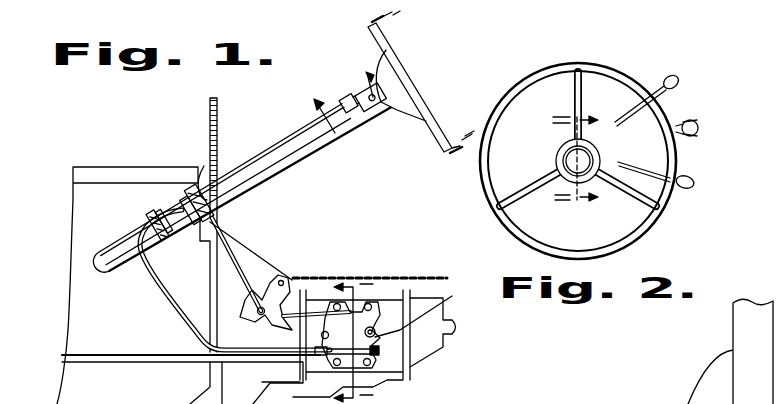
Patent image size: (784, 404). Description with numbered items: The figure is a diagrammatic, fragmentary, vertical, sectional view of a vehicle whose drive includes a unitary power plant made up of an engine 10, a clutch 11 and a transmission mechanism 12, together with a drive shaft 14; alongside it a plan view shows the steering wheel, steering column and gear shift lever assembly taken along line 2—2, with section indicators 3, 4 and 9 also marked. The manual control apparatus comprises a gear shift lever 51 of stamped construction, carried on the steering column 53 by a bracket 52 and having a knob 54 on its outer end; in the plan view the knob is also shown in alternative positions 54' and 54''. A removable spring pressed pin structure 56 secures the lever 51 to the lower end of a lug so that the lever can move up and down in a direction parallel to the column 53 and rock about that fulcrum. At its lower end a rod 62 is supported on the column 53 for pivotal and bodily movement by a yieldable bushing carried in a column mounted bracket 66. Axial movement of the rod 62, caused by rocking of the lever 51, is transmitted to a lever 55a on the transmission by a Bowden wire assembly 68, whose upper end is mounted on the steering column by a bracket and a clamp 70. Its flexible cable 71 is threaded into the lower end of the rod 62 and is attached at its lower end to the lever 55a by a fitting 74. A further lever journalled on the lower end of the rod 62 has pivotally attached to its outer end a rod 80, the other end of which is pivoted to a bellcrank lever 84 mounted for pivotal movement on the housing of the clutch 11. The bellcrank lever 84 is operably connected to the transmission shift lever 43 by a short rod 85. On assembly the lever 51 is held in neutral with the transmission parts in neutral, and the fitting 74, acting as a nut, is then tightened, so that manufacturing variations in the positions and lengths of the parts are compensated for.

In FIG. 1, the engine 10 is at (84, 206).
In FIG. 1, the clutch 11 is at (243, 263).
In FIG. 1, the transmission mechanism 12 is at (388, 298).
In FIG. 1, the drive shaft 14 is at (455, 330).
In FIG. 1, the section line 2— 2 is at (402, 97).
In FIG. 2, the section line 3- 3 is at (583, 156).
In FIG. 1, the section line 4- 4 is at (366, 74).
In FIG. 1, the section line 9- 9 is at (324, 325).
In FIG. 1, the shift lever 43 is at (351, 335).
In FIG. 2, the gear shift lever 51 is at (689, 119).
In FIG. 1, the bracket 52 is at (362, 90).
In FIG. 1, the steering column 53 is at (307, 156).
In FIG. 2, the knob 54 is at (715, 121).
In FIG. 2, the control lever upper position 54' is at (669, 92).
In FIG. 2, the control lever lower position 54'' is at (681, 176).
In FIG. 1, the lever 55a is at (427, 303).
In FIG. 1, the spring pressed pin structure 56 is at (428, 403).
In FIG. 1, the rod 62 is at (293, 139).
In FIG. 1, the column mounted bracket 66 is at (202, 170).
In FIG. 1, the Bowden wire assembly 68 is at (172, 306).
In FIG. 1, the clamp 70 is at (190, 229).
In FIG. 1, the flexible cable 71 is at (352, 372).
In FIG. 1, the fitting 74 is at (373, 355).
In FIG. 1, the rod 80 is at (255, 313).
In FIG. 1, the bellcrank lever 84 is at (322, 263).
In FIG. 1, the short rod 85 is at (298, 329).